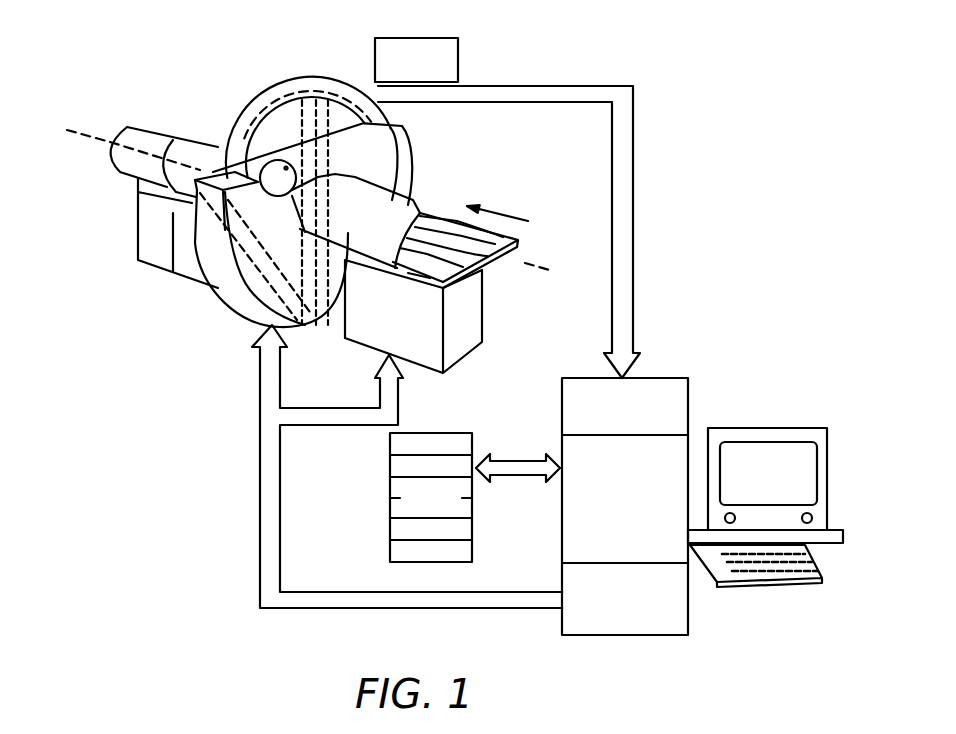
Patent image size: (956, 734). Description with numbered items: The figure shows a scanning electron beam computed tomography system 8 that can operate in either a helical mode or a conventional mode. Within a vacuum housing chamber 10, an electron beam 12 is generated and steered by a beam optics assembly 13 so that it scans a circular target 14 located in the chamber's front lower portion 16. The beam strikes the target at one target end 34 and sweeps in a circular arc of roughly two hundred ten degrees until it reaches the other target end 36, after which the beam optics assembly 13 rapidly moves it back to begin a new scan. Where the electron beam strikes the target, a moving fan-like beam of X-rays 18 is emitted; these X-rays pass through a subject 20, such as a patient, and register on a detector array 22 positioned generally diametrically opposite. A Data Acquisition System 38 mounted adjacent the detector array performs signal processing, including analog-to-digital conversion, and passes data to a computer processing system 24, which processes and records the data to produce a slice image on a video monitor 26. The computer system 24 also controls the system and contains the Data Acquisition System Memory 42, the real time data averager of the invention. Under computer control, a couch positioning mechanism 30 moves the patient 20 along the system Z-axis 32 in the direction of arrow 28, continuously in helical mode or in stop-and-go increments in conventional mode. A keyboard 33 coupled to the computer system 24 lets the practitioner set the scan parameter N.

The scanning electron beam computed tomography system 8 is at (487, 53).
The vacuum housing chamber 10 is at (138, 130).
The electron beam 12 is at (143, 160).
The beam optics assembly 13 is at (192, 147).
The circular target 14 is at (292, 326).
The front lower portion 16 is at (215, 297).
The fan-like beam of X-rays 18 is at (320, 154).
The subject 20 is at (285, 167).
The detector array 22 is at (338, 93).
The computer processing system 24 is at (650, 308).
The video monitor 26 is at (770, 428).
The arrow 28 is at (504, 207).
The couch positioning mechanism 30 is at (468, 307).
The Z-axis 32 is at (110, 142).
The keyboard 33 is at (757, 587).
The target end 34 is at (243, 222).
The target end 36 is at (417, 163).
The Data Acquisition System 38 is at (415, 37).
The Data Acquisition System Memory 42 is at (658, 377).